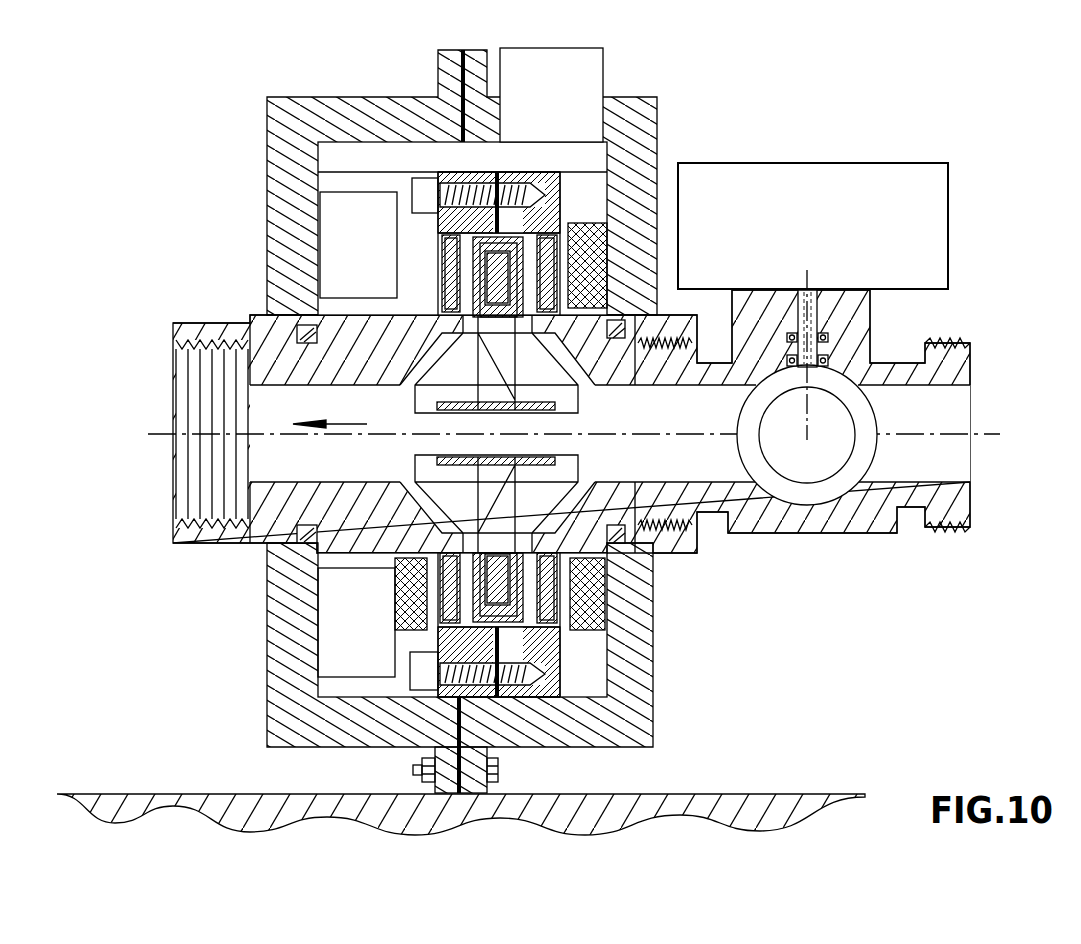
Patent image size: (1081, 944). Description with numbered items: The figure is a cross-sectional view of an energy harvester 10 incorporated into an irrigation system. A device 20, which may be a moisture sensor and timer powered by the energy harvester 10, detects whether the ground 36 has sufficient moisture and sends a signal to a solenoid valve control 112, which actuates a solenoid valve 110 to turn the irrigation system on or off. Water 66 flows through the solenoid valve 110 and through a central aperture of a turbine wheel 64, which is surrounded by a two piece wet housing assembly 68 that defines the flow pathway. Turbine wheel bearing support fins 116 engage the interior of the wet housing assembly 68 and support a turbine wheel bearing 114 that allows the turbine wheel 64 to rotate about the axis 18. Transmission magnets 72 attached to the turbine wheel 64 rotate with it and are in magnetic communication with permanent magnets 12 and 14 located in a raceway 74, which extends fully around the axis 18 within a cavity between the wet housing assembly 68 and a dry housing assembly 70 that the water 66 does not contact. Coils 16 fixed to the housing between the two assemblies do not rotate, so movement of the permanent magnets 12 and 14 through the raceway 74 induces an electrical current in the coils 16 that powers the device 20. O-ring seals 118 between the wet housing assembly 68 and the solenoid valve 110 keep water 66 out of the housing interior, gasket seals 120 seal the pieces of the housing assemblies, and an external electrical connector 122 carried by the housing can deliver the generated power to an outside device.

The energy harvester 10 is at (134, 149).
The permanent magnet 12 is at (545, 272).
The permanent magnet 14 is at (553, 593).
The coil 16 is at (592, 275).
The axis 18 is at (160, 436).
The device 20 is at (437, 237).
The ground 36 is at (775, 788).
The turbine wheel 64 is at (537, 352).
The water 66 is at (353, 471).
The wet housing assembly 68 is at (352, 337).
The dry housing assembly 70 is at (278, 680).
The transmission magnet 72 is at (515, 250).
The raceway 74 is at (357, 240).
The solenoid valve 110 is at (862, 348).
The solenoid valve control 112 is at (931, 209).
The turbine wheel bearing 114 is at (557, 477).
The turbine wheel bearing support fin 116 is at (590, 392).
The o-ring seal 118 is at (300, 546).
The gasket seal 120 is at (500, 640).
The external electrical connector 122 is at (590, 76).